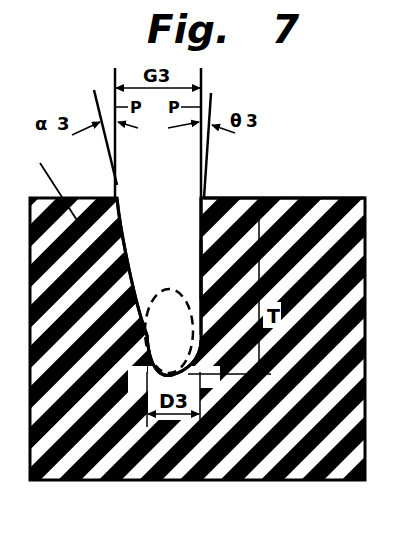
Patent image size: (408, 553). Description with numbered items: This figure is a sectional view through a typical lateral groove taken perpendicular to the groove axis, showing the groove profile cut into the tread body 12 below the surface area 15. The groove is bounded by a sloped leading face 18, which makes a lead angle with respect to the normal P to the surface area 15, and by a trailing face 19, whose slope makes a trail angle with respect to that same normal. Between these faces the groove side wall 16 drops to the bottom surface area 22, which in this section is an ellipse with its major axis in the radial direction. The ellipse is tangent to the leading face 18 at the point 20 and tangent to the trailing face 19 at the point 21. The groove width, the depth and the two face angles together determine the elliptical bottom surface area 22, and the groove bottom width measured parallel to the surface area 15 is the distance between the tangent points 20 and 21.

The workpiece body 12 is at (286, 270).
The surface area 15 is at (243, 195).
The groove side wall 16 is at (192, 243).
The leading face 18 is at (132, 227).
The trailing face 19 is at (196, 258).
The tangent point 20 is at (148, 345).
The tangent point 21 is at (204, 342).
The bottom surface area 22 is at (189, 360).